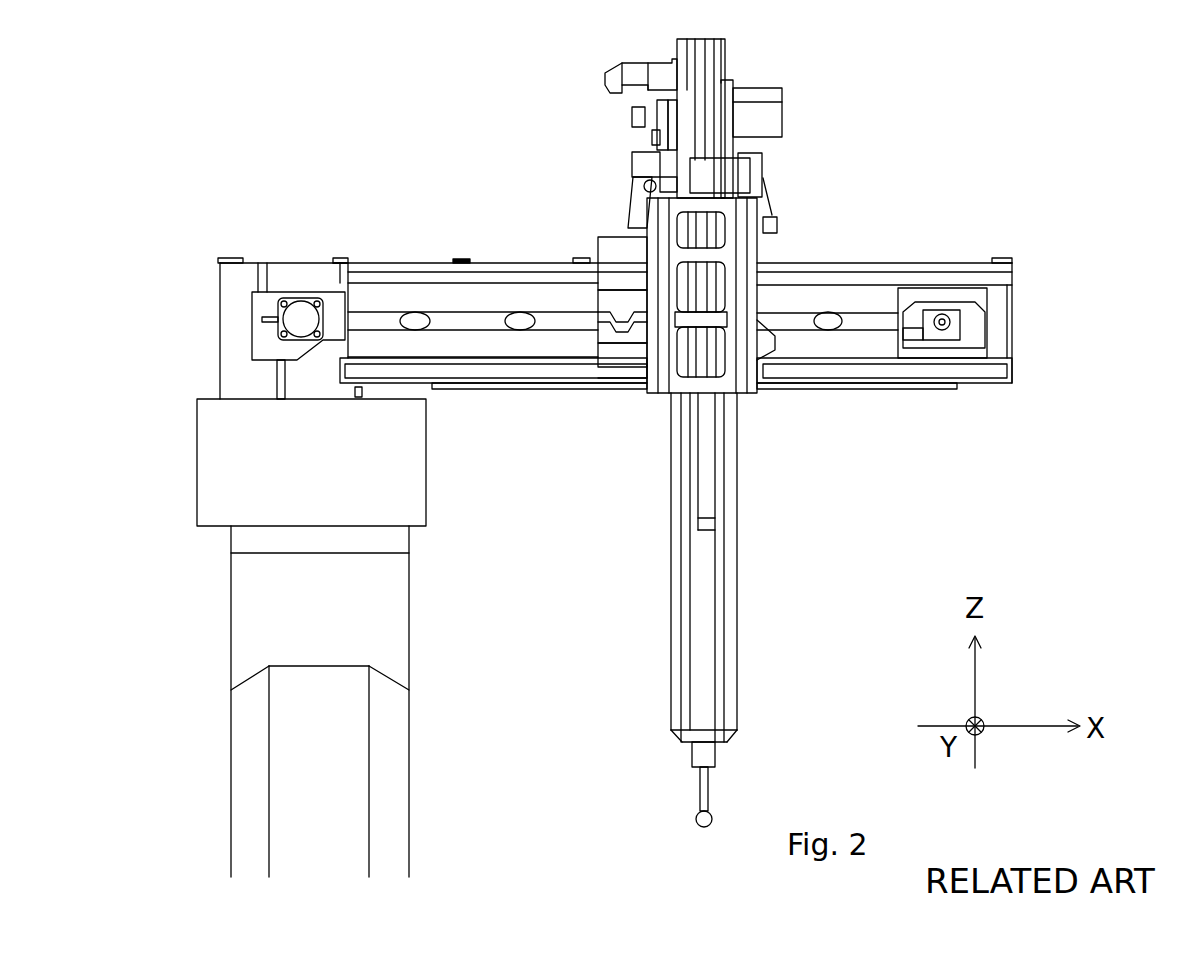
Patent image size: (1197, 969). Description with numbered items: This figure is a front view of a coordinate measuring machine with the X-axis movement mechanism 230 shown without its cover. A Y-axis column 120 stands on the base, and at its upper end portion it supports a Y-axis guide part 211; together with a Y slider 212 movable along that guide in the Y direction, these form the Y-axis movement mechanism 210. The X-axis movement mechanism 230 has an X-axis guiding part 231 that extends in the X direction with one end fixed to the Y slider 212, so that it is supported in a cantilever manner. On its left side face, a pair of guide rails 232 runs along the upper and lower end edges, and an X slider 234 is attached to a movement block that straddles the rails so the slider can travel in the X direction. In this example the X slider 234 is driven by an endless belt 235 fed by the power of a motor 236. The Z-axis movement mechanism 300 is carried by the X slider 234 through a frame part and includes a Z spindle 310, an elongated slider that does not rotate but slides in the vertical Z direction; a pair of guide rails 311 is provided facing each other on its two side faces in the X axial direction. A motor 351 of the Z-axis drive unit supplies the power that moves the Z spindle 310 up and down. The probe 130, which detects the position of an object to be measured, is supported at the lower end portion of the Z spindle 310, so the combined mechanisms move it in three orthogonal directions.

The Y-axis column 120 is at (245, 752).
The probe 130 is at (697, 755).
The Y-axis movement mechanism 210 is at (186, 355).
The Y-axis guide part 211 is at (222, 462).
The Y slider 212 is at (231, 287).
The X-axis movement mechanism 230 is at (840, 210).
The X-axis guiding part 231 is at (485, 293).
The guide rails 232 is at (895, 265).
The X slider 234 is at (615, 262).
The endless belt 235 is at (445, 312).
The motor 236 is at (307, 312).
The Z-axis movement mechanism 300 is at (752, 70).
The Z spindle 310 is at (718, 642).
The guide rails 311 is at (678, 697).
The motor 351 is at (765, 102).